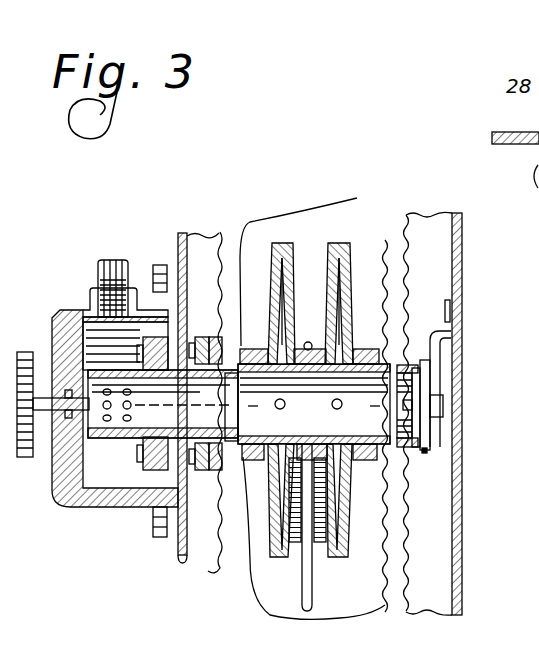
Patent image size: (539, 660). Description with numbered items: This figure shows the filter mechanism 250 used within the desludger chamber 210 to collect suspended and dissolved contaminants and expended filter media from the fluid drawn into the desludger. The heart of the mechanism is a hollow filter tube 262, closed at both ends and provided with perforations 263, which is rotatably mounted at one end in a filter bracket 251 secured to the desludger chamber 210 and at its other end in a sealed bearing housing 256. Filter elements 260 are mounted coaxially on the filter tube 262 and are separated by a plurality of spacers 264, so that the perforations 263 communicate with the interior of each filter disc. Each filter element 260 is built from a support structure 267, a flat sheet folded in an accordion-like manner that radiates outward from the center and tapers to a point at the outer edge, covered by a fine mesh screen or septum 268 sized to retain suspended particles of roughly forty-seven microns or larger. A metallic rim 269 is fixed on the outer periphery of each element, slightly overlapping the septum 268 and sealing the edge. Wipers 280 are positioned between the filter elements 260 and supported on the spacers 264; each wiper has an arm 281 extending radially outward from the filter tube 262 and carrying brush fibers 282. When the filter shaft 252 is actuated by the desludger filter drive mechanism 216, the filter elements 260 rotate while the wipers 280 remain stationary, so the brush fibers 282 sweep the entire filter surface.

The desludger chamber 210 is at (178, 240).
The desludger filter drive mechanism 216 is at (27, 462).
The filter mechanism 250 is at (234, 212).
The filter bracket 251 is at (432, 353).
The filter shaft 252 is at (425, 453).
The sealed bearing housing 256 is at (66, 308).
The filter element 260 is at (297, 233).
The filter tube 262 is at (450, 333).
The perforations 263 is at (337, 409).
The spacer 264 is at (480, 294).
The support structure 267 is at (270, 472).
The fine mesh screen or septum 268 is at (268, 342).
The metallic rim 269 is at (240, 612).
The wiper 280 is at (380, 651).
The wiper arm 281 is at (250, 618).
The brush fibers 282 is at (320, 552).